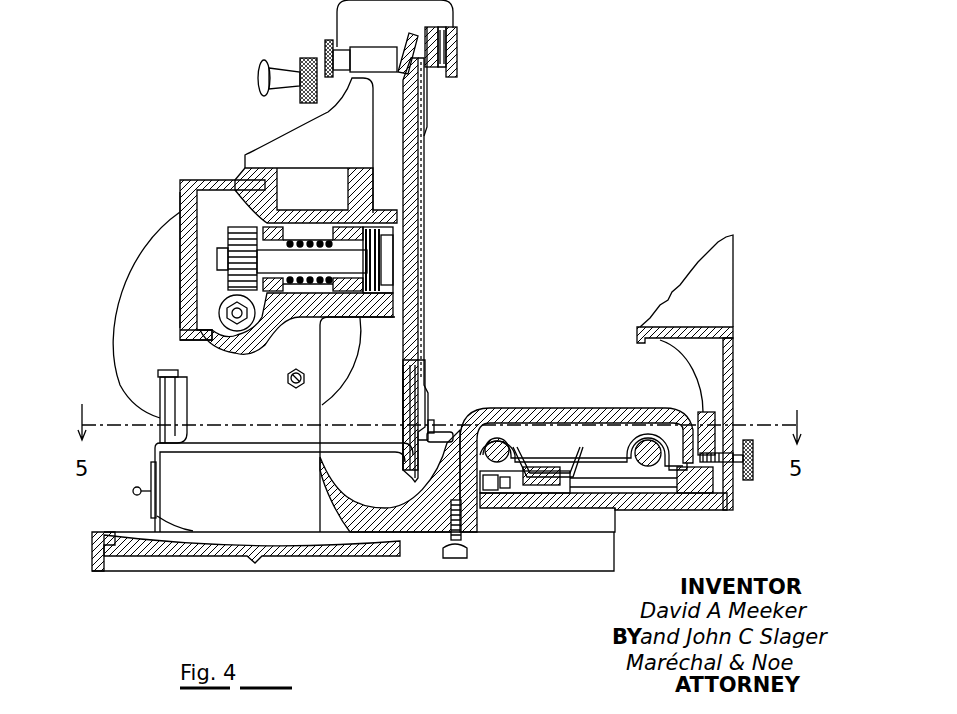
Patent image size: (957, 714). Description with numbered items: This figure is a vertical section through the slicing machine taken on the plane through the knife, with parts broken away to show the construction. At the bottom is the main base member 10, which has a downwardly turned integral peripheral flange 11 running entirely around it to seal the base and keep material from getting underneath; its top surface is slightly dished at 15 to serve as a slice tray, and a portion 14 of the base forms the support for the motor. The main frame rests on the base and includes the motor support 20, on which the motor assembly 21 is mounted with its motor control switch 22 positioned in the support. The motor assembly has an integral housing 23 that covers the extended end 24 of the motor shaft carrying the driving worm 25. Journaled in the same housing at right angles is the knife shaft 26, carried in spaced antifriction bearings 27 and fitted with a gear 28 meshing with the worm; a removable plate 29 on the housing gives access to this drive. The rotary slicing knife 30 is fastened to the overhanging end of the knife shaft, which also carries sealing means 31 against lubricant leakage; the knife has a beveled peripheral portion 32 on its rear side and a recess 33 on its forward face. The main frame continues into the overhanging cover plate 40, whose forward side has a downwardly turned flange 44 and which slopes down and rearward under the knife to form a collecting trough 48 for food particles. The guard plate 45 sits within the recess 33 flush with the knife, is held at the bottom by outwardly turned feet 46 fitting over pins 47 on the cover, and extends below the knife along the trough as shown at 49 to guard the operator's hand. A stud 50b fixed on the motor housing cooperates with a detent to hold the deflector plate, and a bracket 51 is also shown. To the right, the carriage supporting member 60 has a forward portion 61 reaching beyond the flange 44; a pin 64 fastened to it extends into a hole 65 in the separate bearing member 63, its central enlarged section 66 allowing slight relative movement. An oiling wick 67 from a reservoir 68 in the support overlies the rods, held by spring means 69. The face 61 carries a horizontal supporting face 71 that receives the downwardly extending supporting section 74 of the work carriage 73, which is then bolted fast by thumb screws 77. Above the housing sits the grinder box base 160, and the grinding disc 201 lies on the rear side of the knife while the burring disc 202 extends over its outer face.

The main base member 10 is at (339, 573).
The peripheral flange 11 is at (101, 562).
The motor support portion 14 is at (190, 527).
The slice tray 15 is at (223, 557).
The motor support 20 is at (183, 481).
The motor assembly 21 is at (128, 250).
The motor control switch 22 is at (132, 491).
The housing 23 is at (198, 178).
The extended end of the motor shaft 24 is at (232, 313).
The driving worm 25 is at (205, 333).
The knife shaft 26 is at (302, 263).
The antifriction bearings 27 is at (240, 185).
The gear 28 is at (226, 289).
The removable plate 29 is at (180, 193).
The rotary slicing knife 30 is at (418, 163).
The sealing means 31 is at (373, 297).
The beveled peripheral portion 32 is at (402, 438).
The recess 33 is at (426, 122).
The cover plate 40 is at (508, 425).
The downwardly turned flange 44 is at (717, 420).
The guard plate 45 is at (430, 93).
The outwardly turned feet 46 is at (432, 421).
The pins 47 is at (441, 437).
The collecting trough 48 is at (415, 492).
The guard plate extension below knife 49 is at (414, 478).
The stud 50b is at (293, 389).
The bracket 51 is at (160, 393).
The carriage supporting member 60 is at (695, 510).
The forward portion 61 is at (722, 437).
The bearing member 63 is at (497, 494).
The pin 64 is at (540, 485).
The hole 65 is at (516, 494).
The central enlarged section 66 is at (504, 494).
The oiling wick 67 is at (530, 425).
The reservoir 68 is at (653, 487).
The spring means 69 is at (498, 428).
The horizontal supporting face 71 is at (736, 380).
The work carriage 73 is at (707, 327).
The supporting section 74 is at (734, 352).
The thumb screws 77 is at (753, 480).
The grinder box base 160 is at (313, 140).
The grinding disc 201 is at (418, 58).
The burring disc 202 is at (452, 48).